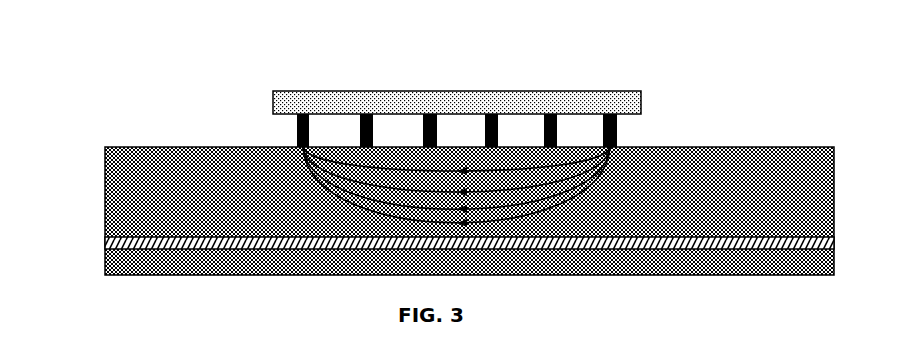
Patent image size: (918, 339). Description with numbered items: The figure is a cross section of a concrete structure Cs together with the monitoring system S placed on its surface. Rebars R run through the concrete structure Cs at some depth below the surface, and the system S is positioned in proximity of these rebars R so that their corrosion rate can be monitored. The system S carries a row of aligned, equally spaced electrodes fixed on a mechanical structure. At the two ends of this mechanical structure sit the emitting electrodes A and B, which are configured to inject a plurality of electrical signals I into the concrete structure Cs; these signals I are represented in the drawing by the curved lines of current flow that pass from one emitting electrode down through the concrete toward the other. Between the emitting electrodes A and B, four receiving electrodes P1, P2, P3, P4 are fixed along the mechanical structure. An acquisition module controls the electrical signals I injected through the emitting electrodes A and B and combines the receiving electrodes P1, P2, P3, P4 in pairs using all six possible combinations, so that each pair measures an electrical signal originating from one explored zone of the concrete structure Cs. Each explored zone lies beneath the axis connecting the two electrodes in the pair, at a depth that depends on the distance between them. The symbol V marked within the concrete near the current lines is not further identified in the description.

The concrete structure Cs is at (91, 163).
The rebars R is at (105, 245).
The system S is at (656, 89).
The emitting electrode A is at (297, 137).
The emitting electrode B is at (617, 138).
The receiving electrode P1 is at (366, 116).
The receiving electrode P2 is at (430, 116).
The receiving electrode P3 is at (492, 116).
The receiving electrode P4 is at (551, 116).
The electrical signals I is at (456, 187).
The voltage V is at (669, 167).